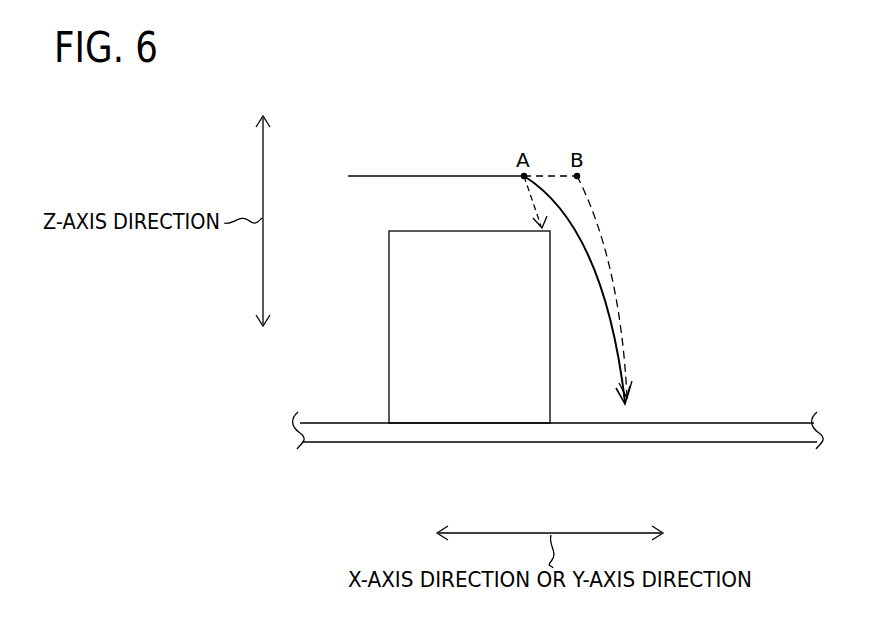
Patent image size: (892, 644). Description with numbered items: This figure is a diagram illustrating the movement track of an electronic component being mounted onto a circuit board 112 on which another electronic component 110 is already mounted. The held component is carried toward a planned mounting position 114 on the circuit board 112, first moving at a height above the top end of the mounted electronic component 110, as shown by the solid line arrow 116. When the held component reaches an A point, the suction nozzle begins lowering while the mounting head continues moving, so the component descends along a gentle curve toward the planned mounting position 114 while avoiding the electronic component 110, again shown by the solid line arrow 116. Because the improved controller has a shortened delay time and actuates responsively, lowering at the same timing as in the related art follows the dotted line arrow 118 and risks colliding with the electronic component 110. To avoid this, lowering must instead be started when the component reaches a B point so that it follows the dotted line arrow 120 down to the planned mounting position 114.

The electronic component 110 is at (402, 328).
The circuit board 112 is at (362, 433).
The planned mounting position 114 is at (635, 415).
The solid line arrow 116 is at (566, 202).
The dotted line arrow 118 is at (533, 200).
The dotted line arrow 120 is at (610, 260).